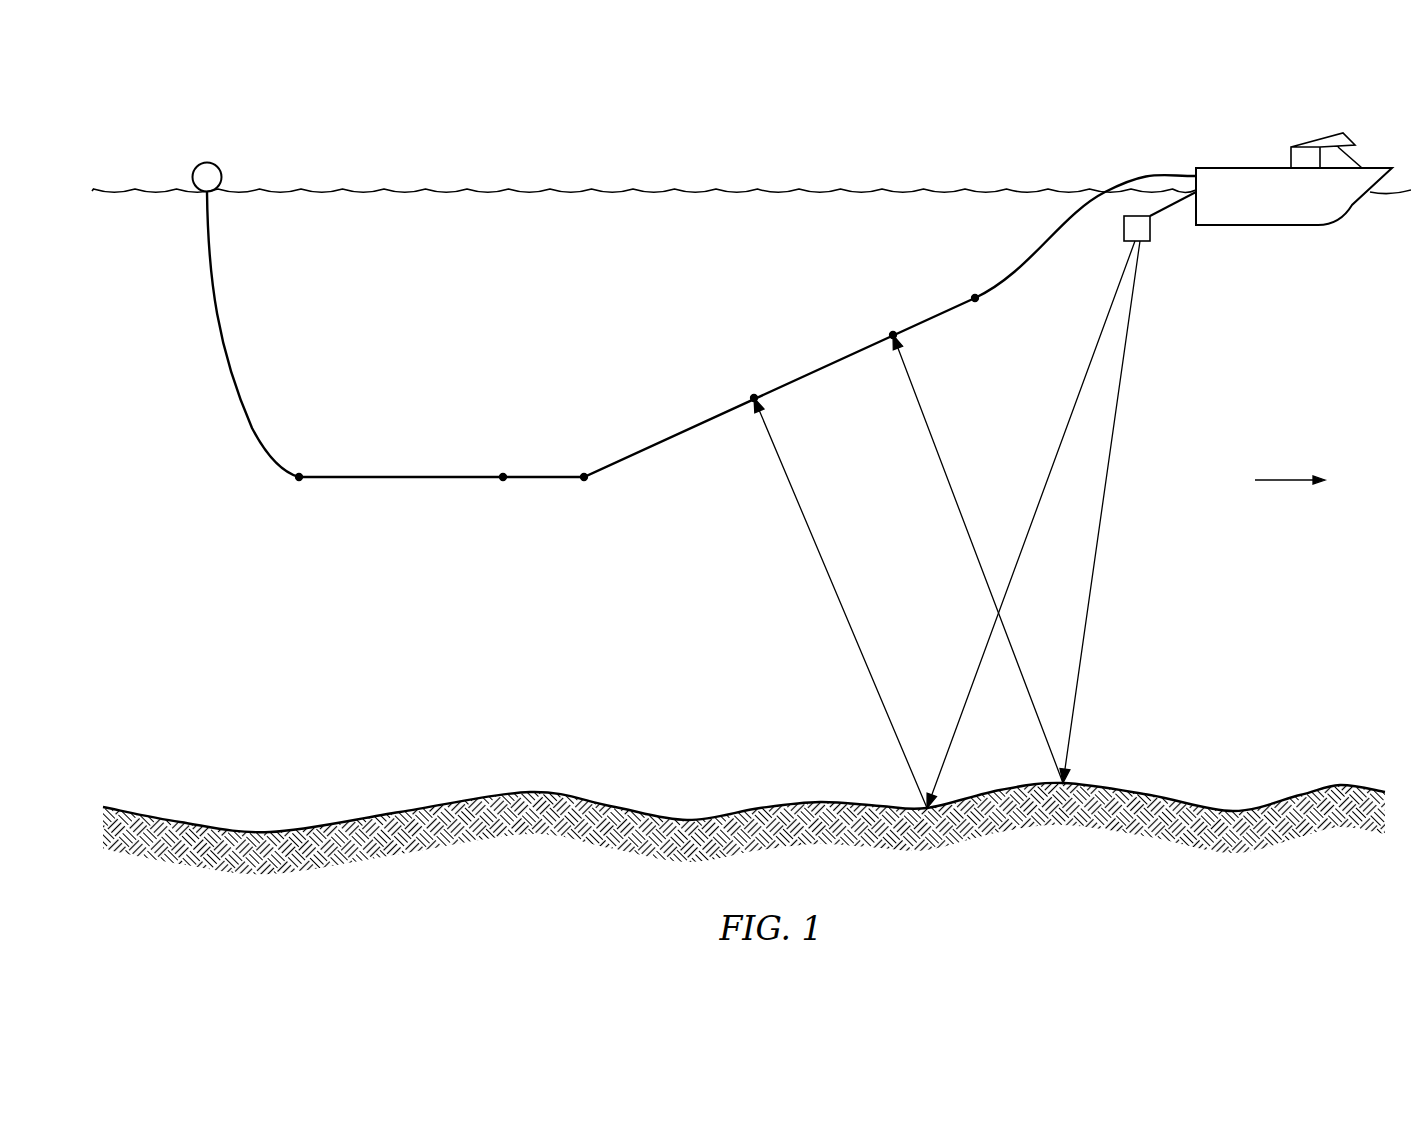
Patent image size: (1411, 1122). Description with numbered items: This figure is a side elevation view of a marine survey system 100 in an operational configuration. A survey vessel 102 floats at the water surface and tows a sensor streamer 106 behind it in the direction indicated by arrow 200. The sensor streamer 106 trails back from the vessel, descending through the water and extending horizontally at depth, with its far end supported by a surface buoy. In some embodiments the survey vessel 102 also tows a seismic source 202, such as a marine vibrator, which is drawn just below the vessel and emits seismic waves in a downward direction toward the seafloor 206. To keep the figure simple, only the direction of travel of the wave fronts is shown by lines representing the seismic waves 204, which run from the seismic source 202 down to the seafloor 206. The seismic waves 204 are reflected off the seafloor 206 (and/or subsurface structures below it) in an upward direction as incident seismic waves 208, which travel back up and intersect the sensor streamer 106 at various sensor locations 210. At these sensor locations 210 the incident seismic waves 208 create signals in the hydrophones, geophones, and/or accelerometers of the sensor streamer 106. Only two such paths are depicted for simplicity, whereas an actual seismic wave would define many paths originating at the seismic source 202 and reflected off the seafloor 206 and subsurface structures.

The marine survey system 100 is at (492, 143).
The survey vessel 102 is at (1252, 167).
The sensor streamer 106 is at (932, 317).
The arrow 200 is at (1278, 480).
The seismic source 202 is at (1148, 245).
The seismic waves 204 is at (1082, 385).
The seafloor 206 is at (530, 791).
The incident seismic waves 208 is at (792, 495).
The sensor locations 210 is at (503, 480).